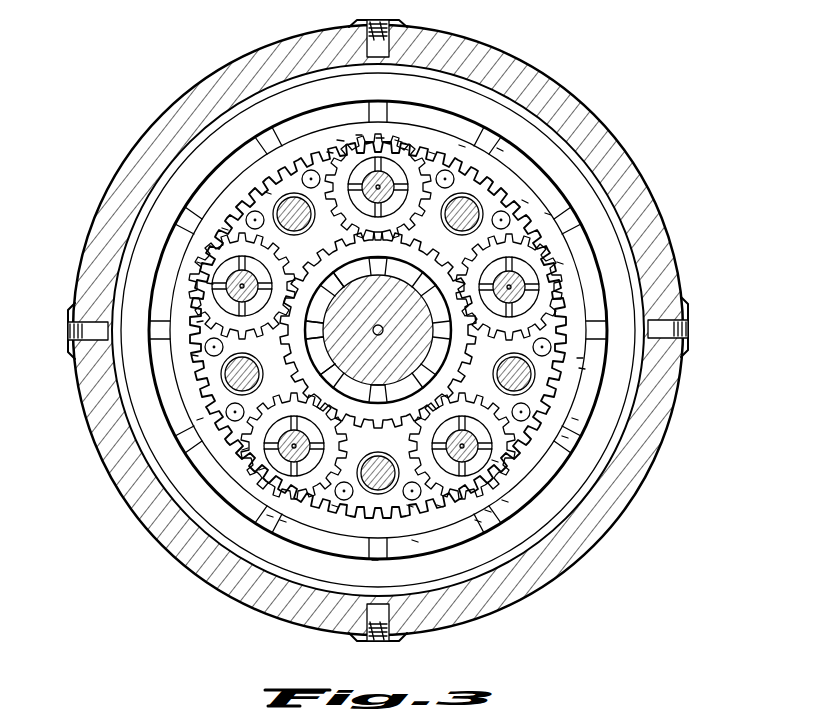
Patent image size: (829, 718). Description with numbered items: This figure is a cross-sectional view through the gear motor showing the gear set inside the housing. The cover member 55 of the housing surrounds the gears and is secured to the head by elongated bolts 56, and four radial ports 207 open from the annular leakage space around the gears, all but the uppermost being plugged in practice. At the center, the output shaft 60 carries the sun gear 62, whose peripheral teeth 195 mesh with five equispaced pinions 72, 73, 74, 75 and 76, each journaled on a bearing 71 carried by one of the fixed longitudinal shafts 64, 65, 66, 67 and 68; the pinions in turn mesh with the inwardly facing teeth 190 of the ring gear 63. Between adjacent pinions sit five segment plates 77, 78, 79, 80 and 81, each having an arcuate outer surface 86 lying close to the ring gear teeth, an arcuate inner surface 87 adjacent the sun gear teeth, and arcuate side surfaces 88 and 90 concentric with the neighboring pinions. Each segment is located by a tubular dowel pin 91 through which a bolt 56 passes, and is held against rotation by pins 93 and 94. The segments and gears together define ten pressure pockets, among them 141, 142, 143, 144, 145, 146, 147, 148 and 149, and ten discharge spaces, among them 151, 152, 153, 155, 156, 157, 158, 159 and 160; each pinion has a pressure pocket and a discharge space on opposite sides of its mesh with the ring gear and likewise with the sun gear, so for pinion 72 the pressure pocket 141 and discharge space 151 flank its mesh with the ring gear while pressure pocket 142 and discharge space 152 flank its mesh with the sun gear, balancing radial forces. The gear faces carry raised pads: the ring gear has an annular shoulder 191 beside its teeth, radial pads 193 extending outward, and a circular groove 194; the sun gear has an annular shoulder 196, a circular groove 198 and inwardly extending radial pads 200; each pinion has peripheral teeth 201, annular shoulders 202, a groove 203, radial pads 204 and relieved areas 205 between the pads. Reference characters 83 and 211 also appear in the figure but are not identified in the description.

The cover member 55 is at (612, 165).
The radial ports 207 is at (362, 626).
The housing boss 83 is at (690, 310).
The pinion 76 is at (582, 293).
The arcuate side surface 88 is at (520, 450).
The ring gear 63 is at (582, 382).
The discharge space 159 is at (588, 332).
The arcuate side surface 90 is at (586, 320).
The elongated bolts 56 is at (370, 500).
The annular shoulder 196 is at (378, 330).
The pressure pocket 148 is at (390, 452).
The discharge space 158 is at (378, 331).
The radial pads 200 is at (378, 330).
The shaft center 211 is at (383, 333).
The discharge space 152 is at (478, 348).
The discharge space 160 is at (393, 269).
The peripheral teeth 195 is at (349, 291).
The circular groove 198 is at (334, 324).
The pressure pocket 146 is at (333, 344).
The discharge space 156 is at (382, 366).
The output shaft 60 is at (336, 384).
The bearing 71 is at (455, 400).
The arcuate inner surface 87 is at (300, 410).
The fixed longitudinal shaft 65 is at (225, 287).
The pressure pocket 144 is at (300, 232).
The pressure pocket 142 is at (440, 222).
The segment plate 78 is at (205, 395).
The sun gear 62 is at (374, 452).
The pin 93 is at (302, 500).
The annular shoulders 202 is at (358, 135).
The pinion 72 is at (380, 138).
The peripheral teeth 201 is at (398, 140).
The pressure pocket 141 is at (340, 140).
The discharge space 151 is at (432, 152).
The groove 203 is at (462, 145).
The circular groove 194 is at (500, 148).
The fixed longitudinal shaft 64 is at (405, 148).
The radial pads 204 is at (330, 152).
The segment plate 77 is at (268, 192).
The segment plate 81 is at (525, 200).
The pressure pocket 149 is at (548, 213).
The discharge space 153 is at (225, 228).
The fixed longitudinal shaft 68 is at (560, 262).
The pinion 73 is at (200, 262).
The relieved areas 205 is at (210, 283).
The pressure pocket 143 is at (200, 322).
The arcuate outer surface 86 is at (580, 358).
The tubular dowel pin 91 is at (335, 505).
The segment plate 80 is at (575, 418).
The inwardly facing gear teeth 190 is at (565, 436).
The discharge space 155 is at (245, 450).
The fixed longitudinal shaft 66 is at (262, 470).
The pressure pocket 147 is at (495, 460).
The fixed longitudinal shaft 67 is at (505, 500).
The pinion 74 is at (270, 515).
The pressure pocket 145 is at (283, 520).
The segment plate 79 is at (410, 505).
The discharge space 157 is at (440, 505).
The annular shoulder 191 is at (478, 520).
The pinion 75 is at (488, 510).
The pin 94 is at (415, 540).
The radial pads 193 is at (375, 560).